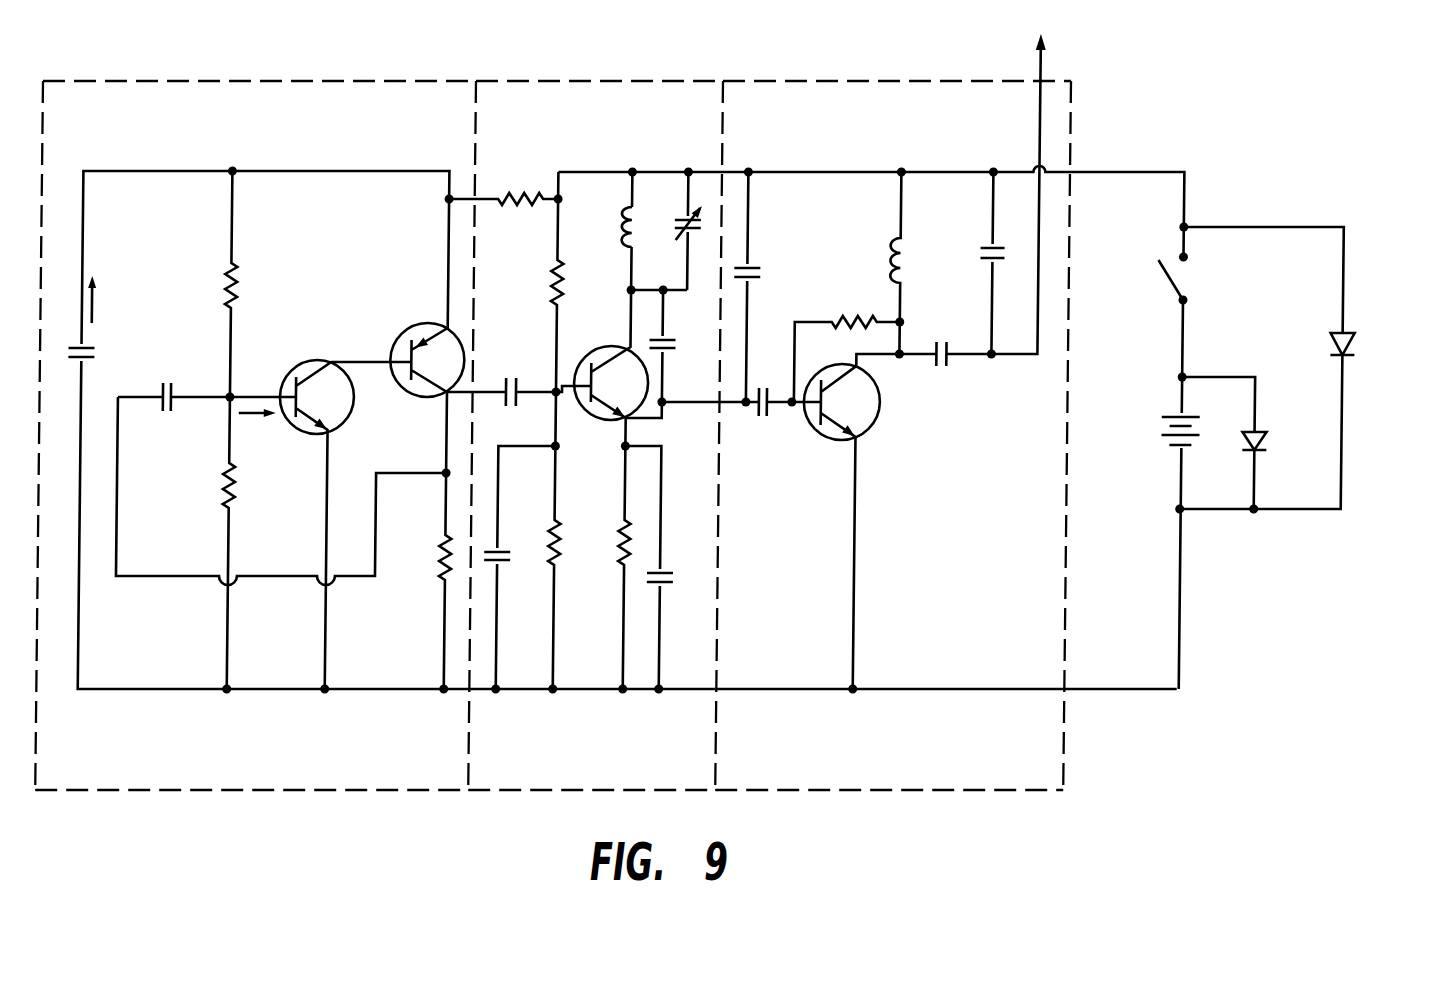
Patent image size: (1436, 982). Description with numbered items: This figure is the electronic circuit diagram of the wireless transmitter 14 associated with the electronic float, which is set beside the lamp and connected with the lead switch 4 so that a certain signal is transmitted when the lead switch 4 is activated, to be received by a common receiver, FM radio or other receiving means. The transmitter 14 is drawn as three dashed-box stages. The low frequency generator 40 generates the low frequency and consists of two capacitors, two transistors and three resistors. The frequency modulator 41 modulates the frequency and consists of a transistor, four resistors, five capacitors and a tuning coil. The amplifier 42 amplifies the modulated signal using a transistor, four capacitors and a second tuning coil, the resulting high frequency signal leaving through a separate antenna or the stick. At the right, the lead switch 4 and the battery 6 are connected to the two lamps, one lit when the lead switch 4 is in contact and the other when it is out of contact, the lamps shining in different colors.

The wireless transmitter 14 is at (1100, 130).
The low frequency generator 40 is at (343, 100).
The frequency modulator 41 is at (697, 105).
The amplifier 42 is at (958, 100).
The lead switch 4 is at (1165, 282).
The battery 6 is at (1160, 430).